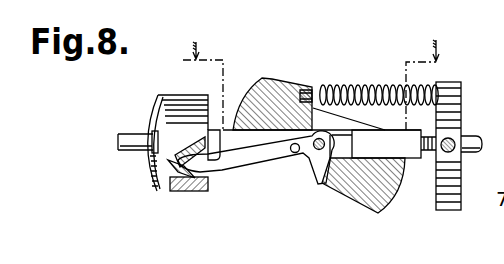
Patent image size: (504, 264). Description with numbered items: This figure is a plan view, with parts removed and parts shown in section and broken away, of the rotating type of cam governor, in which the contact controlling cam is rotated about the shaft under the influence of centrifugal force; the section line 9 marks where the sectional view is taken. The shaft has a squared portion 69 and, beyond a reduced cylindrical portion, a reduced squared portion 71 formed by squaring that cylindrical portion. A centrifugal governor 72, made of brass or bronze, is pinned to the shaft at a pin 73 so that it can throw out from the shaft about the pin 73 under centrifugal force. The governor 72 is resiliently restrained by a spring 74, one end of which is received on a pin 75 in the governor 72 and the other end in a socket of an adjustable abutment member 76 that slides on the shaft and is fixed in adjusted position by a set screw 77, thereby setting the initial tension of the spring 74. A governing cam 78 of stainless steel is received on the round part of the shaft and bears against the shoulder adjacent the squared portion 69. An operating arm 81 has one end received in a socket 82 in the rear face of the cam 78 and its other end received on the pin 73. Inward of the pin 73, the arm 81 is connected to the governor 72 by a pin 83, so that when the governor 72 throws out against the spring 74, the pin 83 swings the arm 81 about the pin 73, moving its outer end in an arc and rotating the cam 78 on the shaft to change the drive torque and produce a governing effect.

The section line 9- 9 is at (314, 85).
The squared portion 69 is at (411, 158).
The reduced squared portion 71 is at (496, 124).
The centrifugal governor 72 is at (358, 200).
The pin 73 is at (318, 150).
The spring 74 is at (364, 86).
The pin 75 is at (313, 91).
The adjustable abutment member 76 is at (461, 94).
The set screw 77 is at (453, 151).
The governing cam 78 is at (157, 190).
The operating arm 81 is at (240, 168).
The socket 82 is at (198, 191).
The pin 83 is at (294, 153).